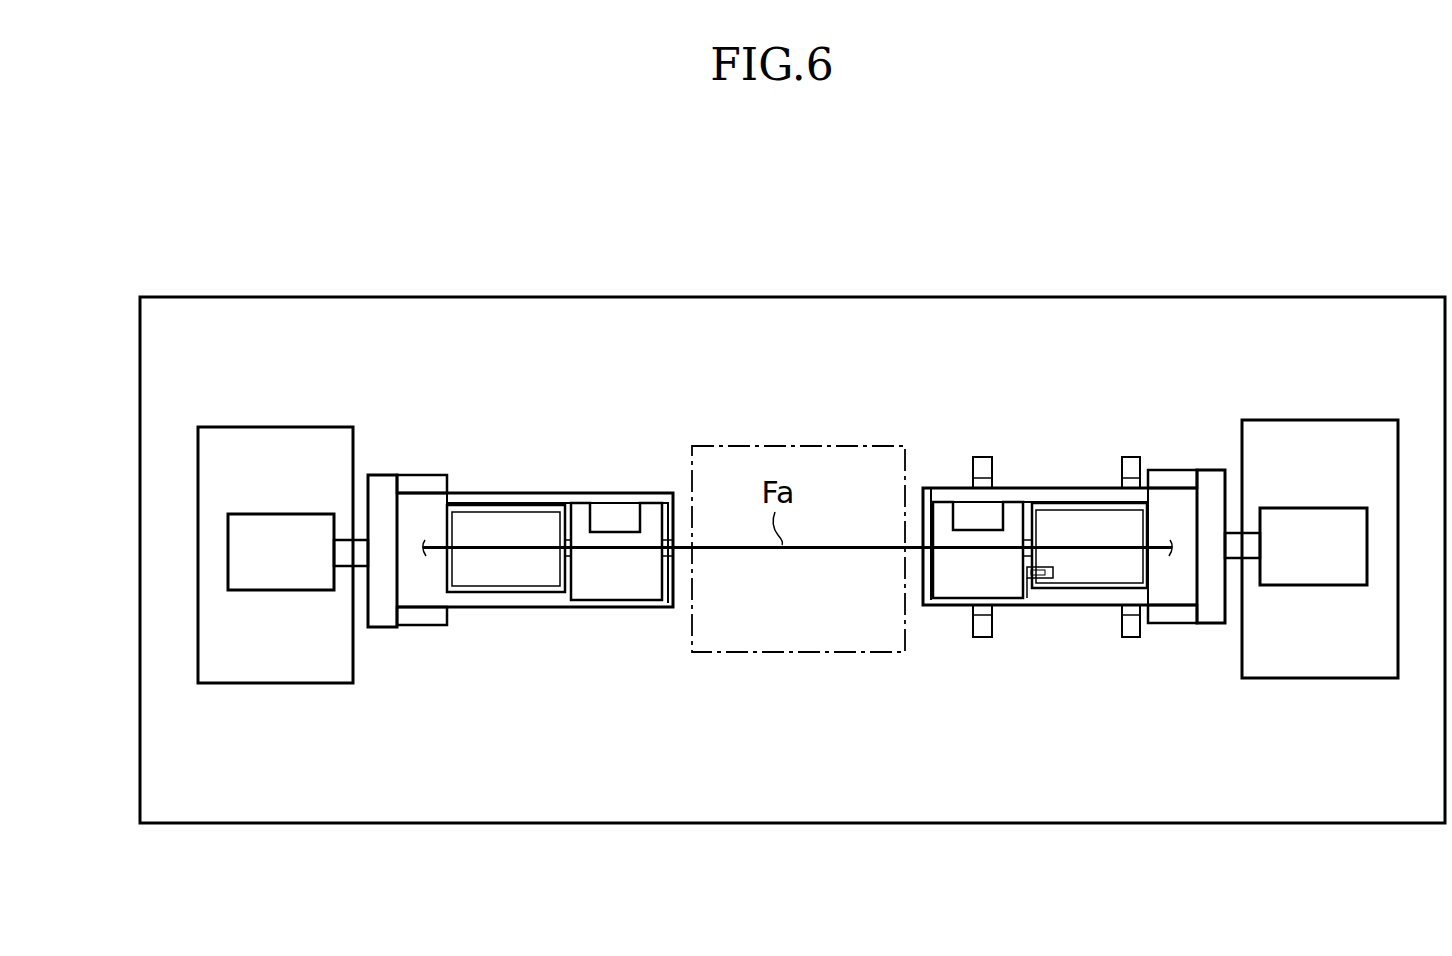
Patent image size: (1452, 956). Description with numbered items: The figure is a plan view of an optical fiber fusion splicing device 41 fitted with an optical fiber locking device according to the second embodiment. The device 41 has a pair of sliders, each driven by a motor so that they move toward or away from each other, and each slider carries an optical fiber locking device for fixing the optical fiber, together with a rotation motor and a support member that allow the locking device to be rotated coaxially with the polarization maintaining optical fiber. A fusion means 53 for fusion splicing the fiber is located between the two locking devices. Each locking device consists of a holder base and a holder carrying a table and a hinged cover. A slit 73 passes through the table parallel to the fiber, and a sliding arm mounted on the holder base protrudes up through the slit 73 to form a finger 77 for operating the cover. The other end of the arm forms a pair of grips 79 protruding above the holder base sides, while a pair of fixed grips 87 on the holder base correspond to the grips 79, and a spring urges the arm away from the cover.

The optical fiber fusion splicing device 41 is at (818, 256).
The fusion means 53 is at (818, 443).
The slit 73 is at (1037, 600).
The finger 77 is at (1027, 572).
The grip 79 is at (1128, 455).
The fixed grip 87 is at (982, 455).